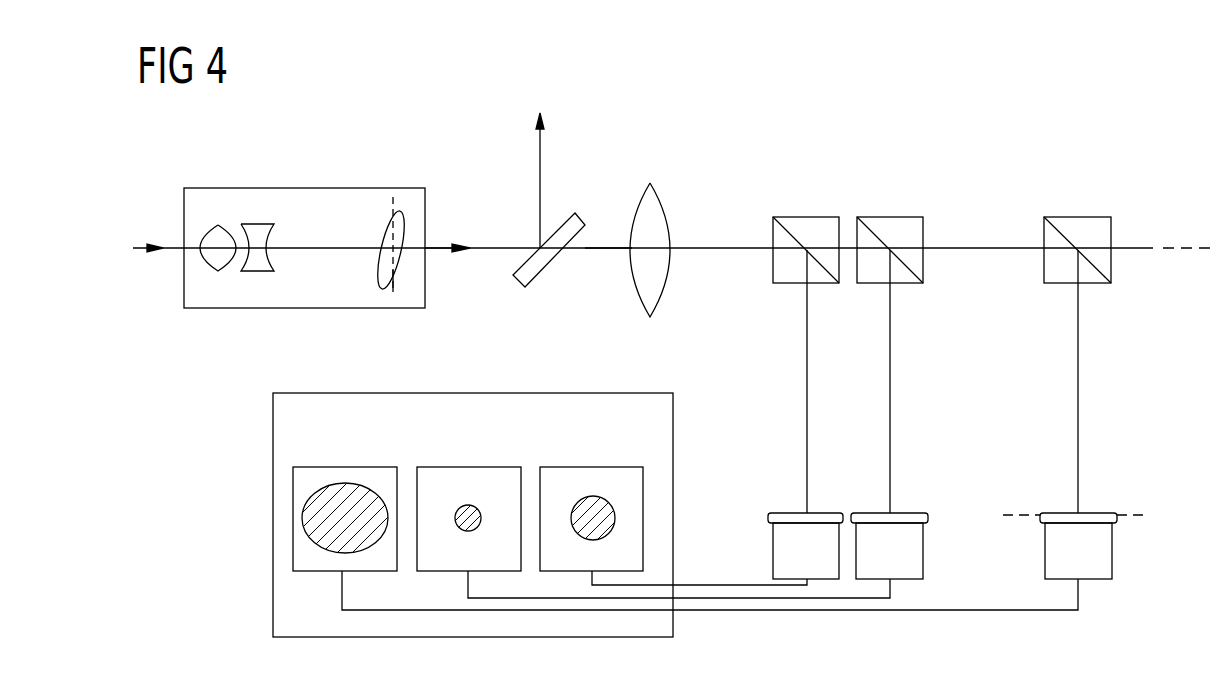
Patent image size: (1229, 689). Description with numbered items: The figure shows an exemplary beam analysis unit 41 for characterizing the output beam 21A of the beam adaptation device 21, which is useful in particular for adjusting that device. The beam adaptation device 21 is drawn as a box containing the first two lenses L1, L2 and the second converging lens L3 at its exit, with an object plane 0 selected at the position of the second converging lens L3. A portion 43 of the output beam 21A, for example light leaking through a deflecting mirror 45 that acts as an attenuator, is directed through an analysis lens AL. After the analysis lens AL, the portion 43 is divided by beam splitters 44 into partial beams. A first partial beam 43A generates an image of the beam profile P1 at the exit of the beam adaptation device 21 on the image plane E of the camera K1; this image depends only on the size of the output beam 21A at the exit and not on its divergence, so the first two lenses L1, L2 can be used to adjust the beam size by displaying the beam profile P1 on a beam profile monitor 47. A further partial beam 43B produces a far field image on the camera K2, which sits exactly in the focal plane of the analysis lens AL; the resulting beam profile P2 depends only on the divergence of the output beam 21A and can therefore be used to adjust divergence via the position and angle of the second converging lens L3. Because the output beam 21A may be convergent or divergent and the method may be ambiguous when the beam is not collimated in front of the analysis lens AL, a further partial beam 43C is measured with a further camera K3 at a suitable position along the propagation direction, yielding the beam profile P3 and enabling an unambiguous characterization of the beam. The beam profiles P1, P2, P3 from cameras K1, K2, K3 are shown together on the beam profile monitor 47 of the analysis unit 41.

The beam analysis unit 41 is at (1055, 115).
The beam adaptation device 21 is at (304, 172).
The output beam 21A is at (488, 245).
The first lens L1 is at (218, 273).
The second lens L2 is at (257, 273).
The second converging lens L3 is at (387, 232).
The object plane 0 is at (393, 282).
The deflecting mirror 45 is at (538, 276).
The portion of the output beam 43 is at (609, 245).
The analysis lens AL is at (650, 184).
The beam splitters 44 is at (806, 215).
The first partial beam 43A is at (1079, 403).
The further partial beam 43B is at (891, 403).
The further partial beam 43C is at (806, 403).
The camera K1 is at (1078, 546).
The camera K2 is at (889, 546).
The further camera K3 is at (805, 546).
The image plane E is at (1152, 518).
The beam profile monitor 47 is at (477, 392).
The beam profile P1 is at (345, 483).
The beam profile P2 is at (466, 504).
The beam profile P3 is at (591, 496).